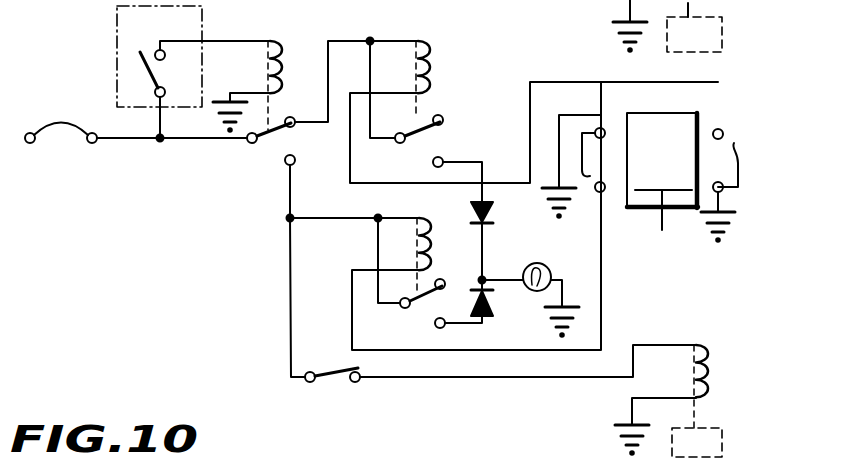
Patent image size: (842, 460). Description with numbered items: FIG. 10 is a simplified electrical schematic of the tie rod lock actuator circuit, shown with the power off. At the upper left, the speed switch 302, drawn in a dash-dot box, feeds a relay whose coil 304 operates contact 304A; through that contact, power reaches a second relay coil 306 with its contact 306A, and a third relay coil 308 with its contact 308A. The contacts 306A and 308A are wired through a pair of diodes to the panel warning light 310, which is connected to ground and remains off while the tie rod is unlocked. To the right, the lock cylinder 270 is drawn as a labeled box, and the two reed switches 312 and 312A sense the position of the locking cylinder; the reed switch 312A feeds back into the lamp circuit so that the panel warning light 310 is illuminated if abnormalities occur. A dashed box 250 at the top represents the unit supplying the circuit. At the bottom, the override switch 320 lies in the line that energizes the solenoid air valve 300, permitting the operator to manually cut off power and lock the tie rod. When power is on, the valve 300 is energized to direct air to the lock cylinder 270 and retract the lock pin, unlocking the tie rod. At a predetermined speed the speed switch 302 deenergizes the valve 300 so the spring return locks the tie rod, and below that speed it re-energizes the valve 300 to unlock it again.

The control unit (dashed box) 250 is at (723, 30).
The lock cylinder 270 is at (687, 213).
The solenoid-operated valve 300 is at (723, 436).
The speed switch 302 is at (204, 29).
The relay coil 304 is at (281, 42).
The relay contact switch 304A is at (261, 146).
The relay coil 306 is at (437, 45).
The relay contact switch 306A is at (442, 129).
The relay coil 308 is at (443, 211).
The relay contact switch 308A is at (424, 300).
The panel warning light 310 is at (527, 292).
The reed switch 312 is at (743, 149).
The reed switch 312A is at (582, 146).
The override switch 320 is at (338, 347).